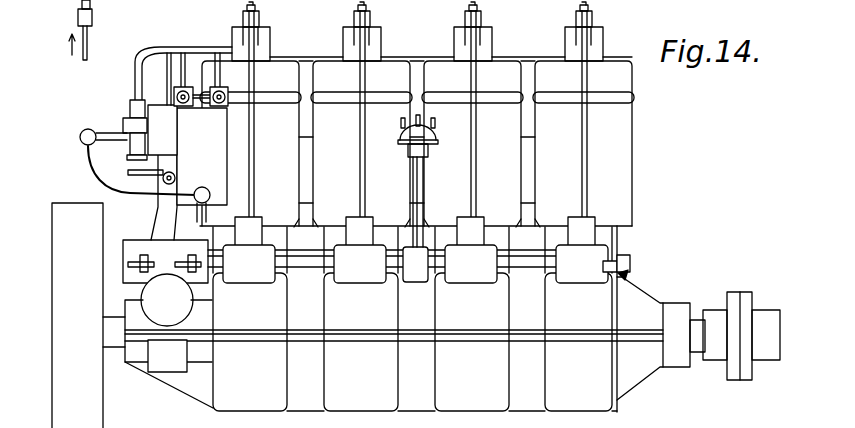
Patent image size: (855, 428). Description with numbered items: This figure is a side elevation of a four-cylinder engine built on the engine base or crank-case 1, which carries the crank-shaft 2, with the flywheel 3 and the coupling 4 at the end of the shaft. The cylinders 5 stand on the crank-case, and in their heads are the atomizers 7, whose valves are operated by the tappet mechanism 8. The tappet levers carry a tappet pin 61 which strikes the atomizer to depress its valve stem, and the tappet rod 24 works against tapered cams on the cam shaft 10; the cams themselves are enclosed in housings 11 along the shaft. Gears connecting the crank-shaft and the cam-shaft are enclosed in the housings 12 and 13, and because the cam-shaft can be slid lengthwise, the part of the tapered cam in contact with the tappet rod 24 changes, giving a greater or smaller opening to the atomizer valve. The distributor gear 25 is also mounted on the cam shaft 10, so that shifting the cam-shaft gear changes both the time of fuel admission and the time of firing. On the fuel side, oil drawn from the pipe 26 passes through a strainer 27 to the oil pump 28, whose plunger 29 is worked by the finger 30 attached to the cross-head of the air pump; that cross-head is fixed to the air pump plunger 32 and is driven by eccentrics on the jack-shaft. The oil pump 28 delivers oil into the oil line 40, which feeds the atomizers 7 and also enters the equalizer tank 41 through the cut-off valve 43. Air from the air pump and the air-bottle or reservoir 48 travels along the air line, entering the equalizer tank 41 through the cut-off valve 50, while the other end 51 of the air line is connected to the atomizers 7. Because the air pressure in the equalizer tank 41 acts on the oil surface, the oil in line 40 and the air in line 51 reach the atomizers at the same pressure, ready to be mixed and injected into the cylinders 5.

The engine base 1 is at (378, 390).
The crank-shaft 2 is at (695, 318).
The flywheel 3 is at (68, 258).
The coupling 4 is at (745, 300).
The cylinders 5 is at (280, 70).
The atomizers 7 is at (452, 33).
The tappet mechanism 8 is at (365, 18).
The cam shaft 10 is at (617, 268).
The housings 11 is at (582, 240).
The housing 12 is at (165, 362).
The housing 13 is at (157, 288).
The tappet rod 24 is at (587, 143).
The distributor gear 25 is at (403, 141).
The pipe 26 is at (90, 50).
The strainer 27 is at (82, 130).
The oil pump 28 is at (130, 105).
The plunger 29 is at (128, 152).
The finger 30 is at (130, 172).
The air pump plunger 32 is at (165, 163).
The oil line 40 is at (133, 82).
The equalizer tank 41 is at (213, 142).
The cut-off valve 43 is at (213, 108).
The air-bottle 48 is at (161, 129).
The cut-off valve 50 is at (180, 113).
The air line end 51 is at (163, 70).
The tappet pin 61 is at (169, 395).